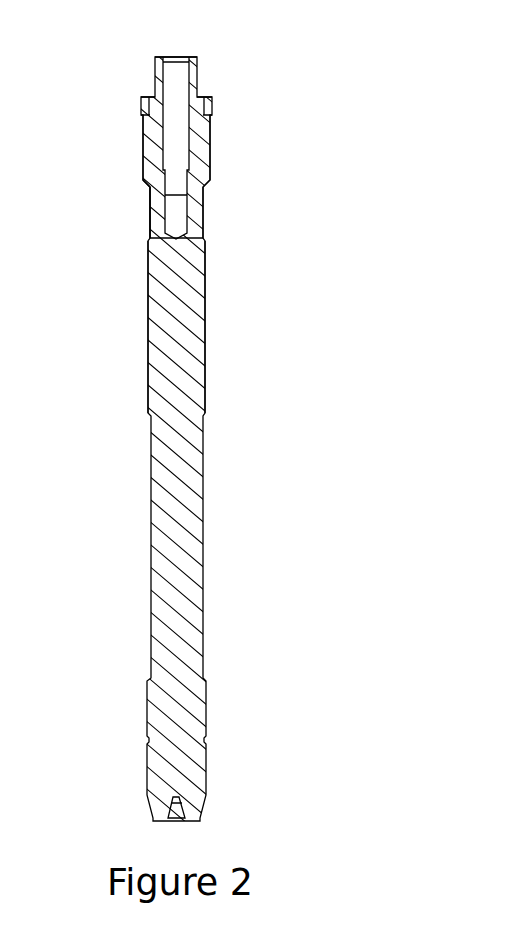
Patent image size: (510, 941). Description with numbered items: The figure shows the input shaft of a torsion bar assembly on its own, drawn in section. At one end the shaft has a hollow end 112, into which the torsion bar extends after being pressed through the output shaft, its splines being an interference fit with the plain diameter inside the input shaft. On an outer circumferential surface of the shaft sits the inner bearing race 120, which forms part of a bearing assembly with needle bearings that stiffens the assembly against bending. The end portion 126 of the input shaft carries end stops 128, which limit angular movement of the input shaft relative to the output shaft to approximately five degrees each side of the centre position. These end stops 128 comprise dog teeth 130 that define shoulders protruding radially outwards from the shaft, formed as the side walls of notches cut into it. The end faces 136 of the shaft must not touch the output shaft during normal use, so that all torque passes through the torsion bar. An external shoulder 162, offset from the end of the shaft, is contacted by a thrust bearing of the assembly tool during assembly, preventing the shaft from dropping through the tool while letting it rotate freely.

The hollow end 112 is at (237, 147).
The inner bearing race 120 is at (197, 68).
The end portion 126 is at (237, 170).
The end stops 128 is at (142, 120).
The dog teeth 130 is at (142, 102).
The end faces 136 is at (212, 110).
The external shoulder 162 is at (148, 182).